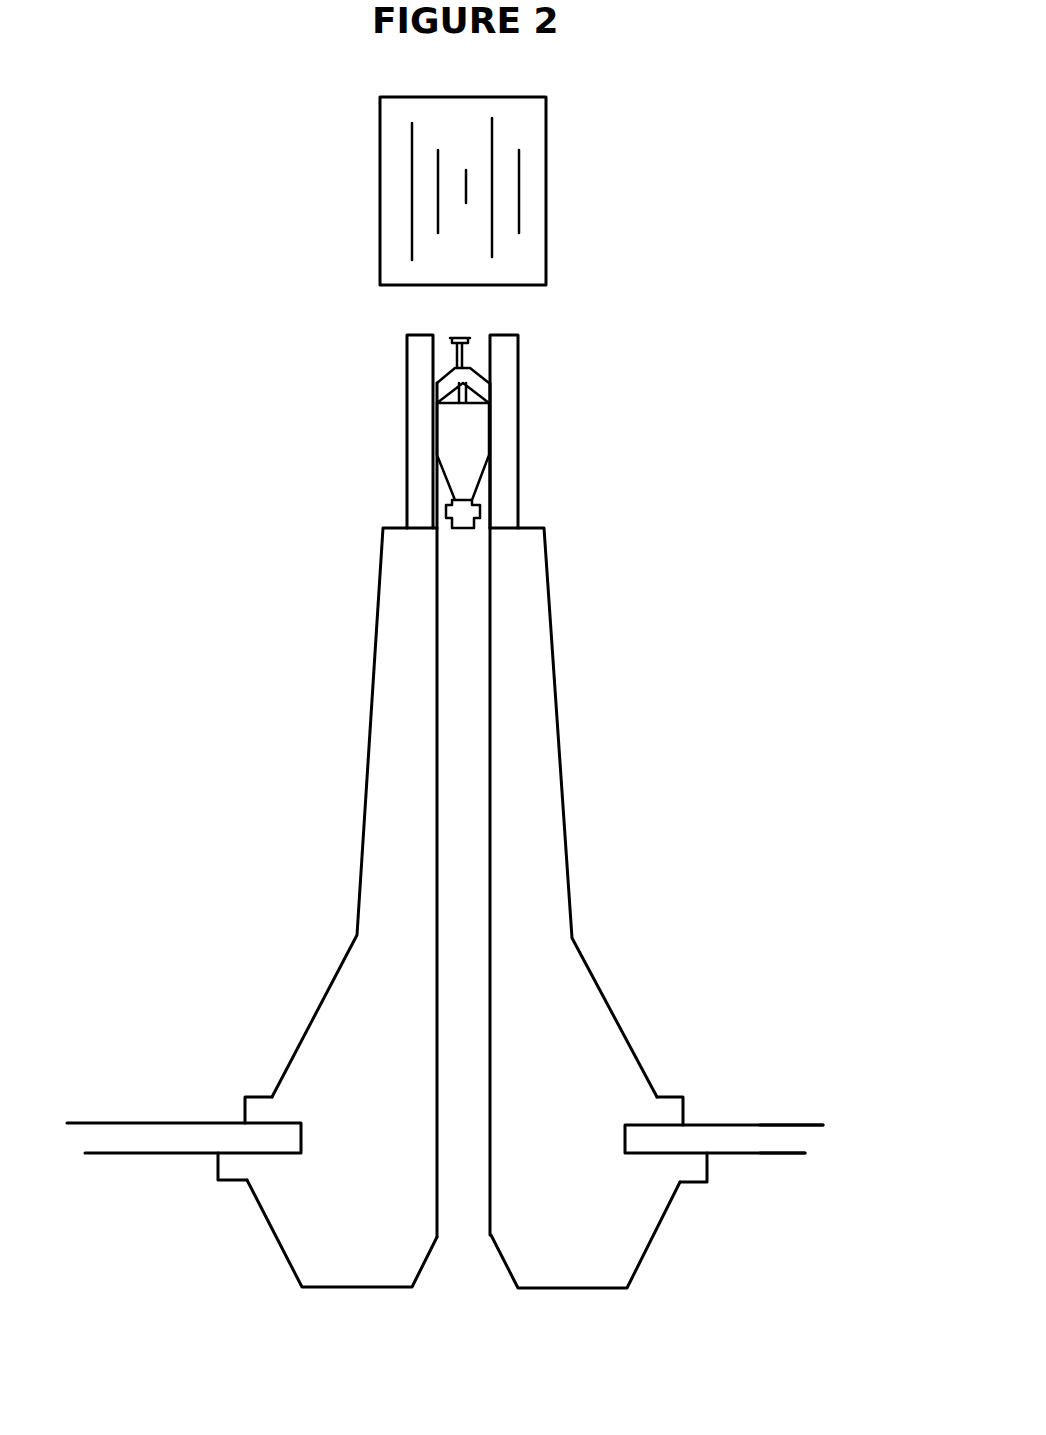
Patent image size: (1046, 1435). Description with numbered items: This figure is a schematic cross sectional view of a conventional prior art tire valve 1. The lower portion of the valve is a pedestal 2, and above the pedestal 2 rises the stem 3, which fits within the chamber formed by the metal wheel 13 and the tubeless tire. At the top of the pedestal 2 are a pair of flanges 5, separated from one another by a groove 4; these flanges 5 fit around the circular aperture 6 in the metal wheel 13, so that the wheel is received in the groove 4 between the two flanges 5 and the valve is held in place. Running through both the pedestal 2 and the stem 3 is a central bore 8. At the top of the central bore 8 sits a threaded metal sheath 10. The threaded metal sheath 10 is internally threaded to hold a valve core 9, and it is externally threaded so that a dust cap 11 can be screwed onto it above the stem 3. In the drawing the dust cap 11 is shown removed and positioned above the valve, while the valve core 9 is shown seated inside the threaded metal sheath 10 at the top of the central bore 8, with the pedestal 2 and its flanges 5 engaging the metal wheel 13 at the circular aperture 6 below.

The tire valve 1 is at (276, 473).
The pedestal 2 is at (625, 1205).
The stem 3 is at (388, 626).
The groove 4 is at (620, 1140).
The flanges 5 is at (795, 1242).
The circular aperture 6 is at (565, 1070).
The central bore 8 is at (468, 1303).
The valve core 9 is at (467, 423).
The threaded metal sheath 10 is at (503, 353).
The dust cap 11 is at (397, 198).
The metal wheel 13 is at (755, 1140).